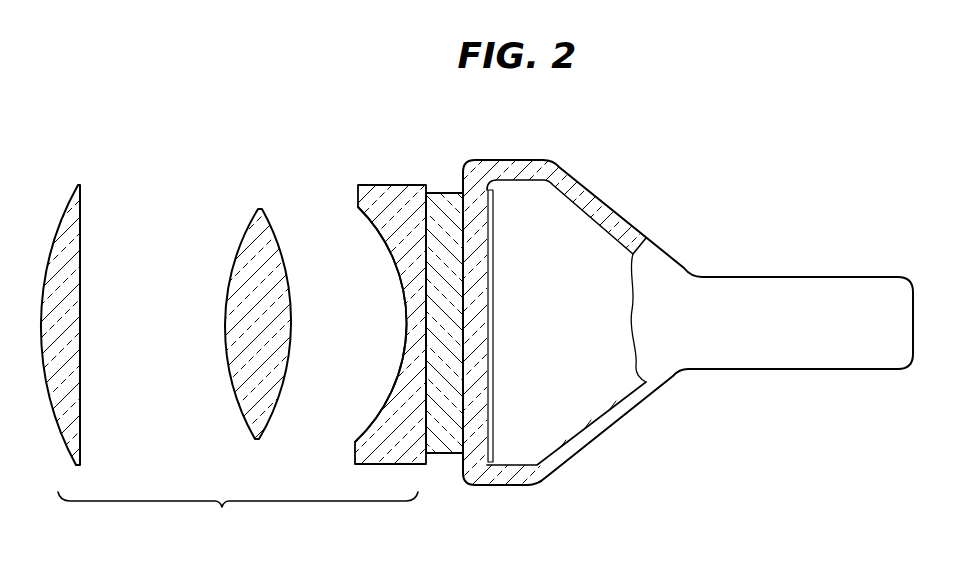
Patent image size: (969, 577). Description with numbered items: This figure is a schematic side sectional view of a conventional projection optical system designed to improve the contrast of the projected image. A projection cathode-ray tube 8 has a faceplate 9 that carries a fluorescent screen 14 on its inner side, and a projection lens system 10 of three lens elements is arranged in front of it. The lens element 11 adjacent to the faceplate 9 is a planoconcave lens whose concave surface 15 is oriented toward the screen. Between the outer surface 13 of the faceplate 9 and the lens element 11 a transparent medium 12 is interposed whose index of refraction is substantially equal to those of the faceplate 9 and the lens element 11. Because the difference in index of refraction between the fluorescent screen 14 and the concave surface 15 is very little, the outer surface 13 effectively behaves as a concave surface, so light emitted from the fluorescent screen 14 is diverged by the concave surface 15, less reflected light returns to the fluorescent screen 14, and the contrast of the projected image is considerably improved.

The projection cathode-ray tube 8 is at (791, 276).
The faceplate 9 is at (466, 315).
The projection lens system 10 is at (226, 503).
The lens element 11 is at (395, 185).
The transparent medium 12 is at (447, 192).
The outer surface 13 is at (462, 265).
The fluorescent screen 14 is at (492, 210).
The concave surface 15 is at (387, 227).